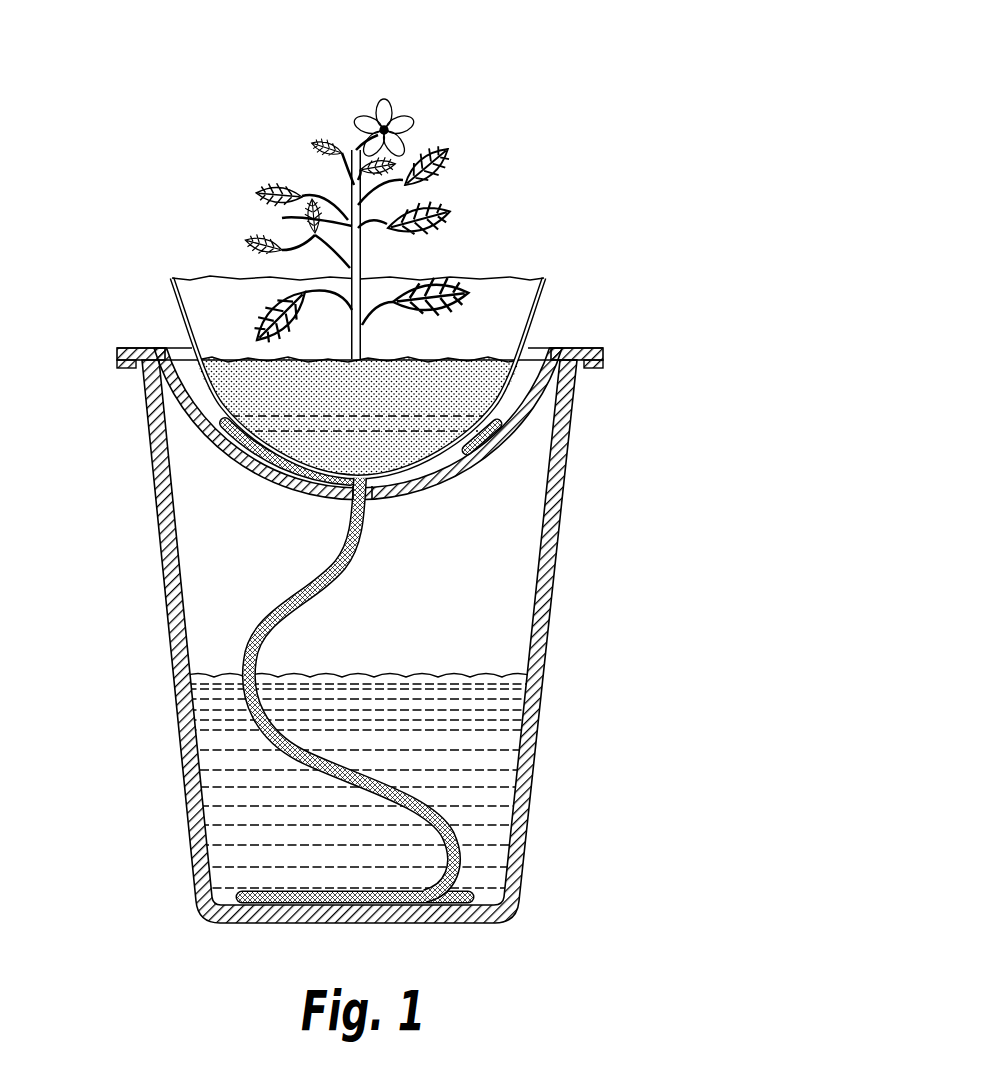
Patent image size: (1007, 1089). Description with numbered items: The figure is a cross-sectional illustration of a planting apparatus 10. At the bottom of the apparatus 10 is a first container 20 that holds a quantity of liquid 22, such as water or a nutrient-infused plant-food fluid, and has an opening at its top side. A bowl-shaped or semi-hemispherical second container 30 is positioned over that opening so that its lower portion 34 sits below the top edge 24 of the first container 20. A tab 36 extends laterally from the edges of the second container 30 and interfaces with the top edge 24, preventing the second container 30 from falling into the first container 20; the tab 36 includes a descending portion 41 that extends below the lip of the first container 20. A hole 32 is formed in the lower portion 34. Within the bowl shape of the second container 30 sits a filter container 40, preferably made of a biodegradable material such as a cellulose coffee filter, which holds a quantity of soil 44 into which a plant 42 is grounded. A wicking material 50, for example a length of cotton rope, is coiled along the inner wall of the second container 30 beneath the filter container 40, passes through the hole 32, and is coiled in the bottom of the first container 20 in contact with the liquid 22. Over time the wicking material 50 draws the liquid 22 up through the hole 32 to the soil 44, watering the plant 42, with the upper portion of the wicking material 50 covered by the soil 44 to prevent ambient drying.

The planting apparatus 10 is at (539, 108).
The first container 20 is at (550, 623).
The quantity of liquid 22 is at (478, 782).
The top edge 24 is at (578, 368).
The second container 30 is at (570, 348).
The hole 32 is at (370, 517).
The lower portion 34 is at (287, 482).
The tab 36 is at (130, 348).
The filter container 40 is at (527, 292).
The descending portion 41 is at (118, 370).
The plant 42 is at (445, 205).
The quantity of soil 44 is at (371, 407).
The wicking material 50 is at (226, 436).